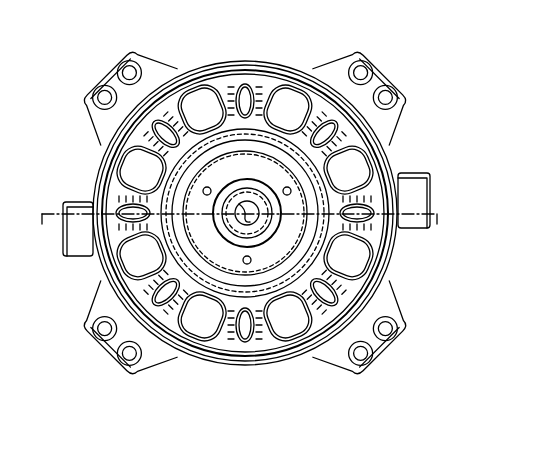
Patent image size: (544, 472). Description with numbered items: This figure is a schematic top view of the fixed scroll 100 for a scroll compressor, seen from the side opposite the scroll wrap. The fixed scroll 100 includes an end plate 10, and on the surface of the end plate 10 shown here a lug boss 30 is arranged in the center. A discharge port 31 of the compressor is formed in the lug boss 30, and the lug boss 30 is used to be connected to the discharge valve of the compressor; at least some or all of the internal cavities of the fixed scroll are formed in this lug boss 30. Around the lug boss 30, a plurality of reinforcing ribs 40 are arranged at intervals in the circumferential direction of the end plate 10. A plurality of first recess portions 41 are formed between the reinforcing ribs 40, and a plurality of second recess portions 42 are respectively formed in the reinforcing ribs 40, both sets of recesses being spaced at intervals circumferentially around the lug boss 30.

The fixed scroll 100 is at (490, 60).
The end plate 10 is at (100, 163).
The lug boss 30 is at (223, 255).
The discharge port 31 is at (252, 222).
The reinforcing ribs 40 is at (257, 88).
The first recess portions 41 is at (293, 110).
The second recess portions 42 is at (243, 92).